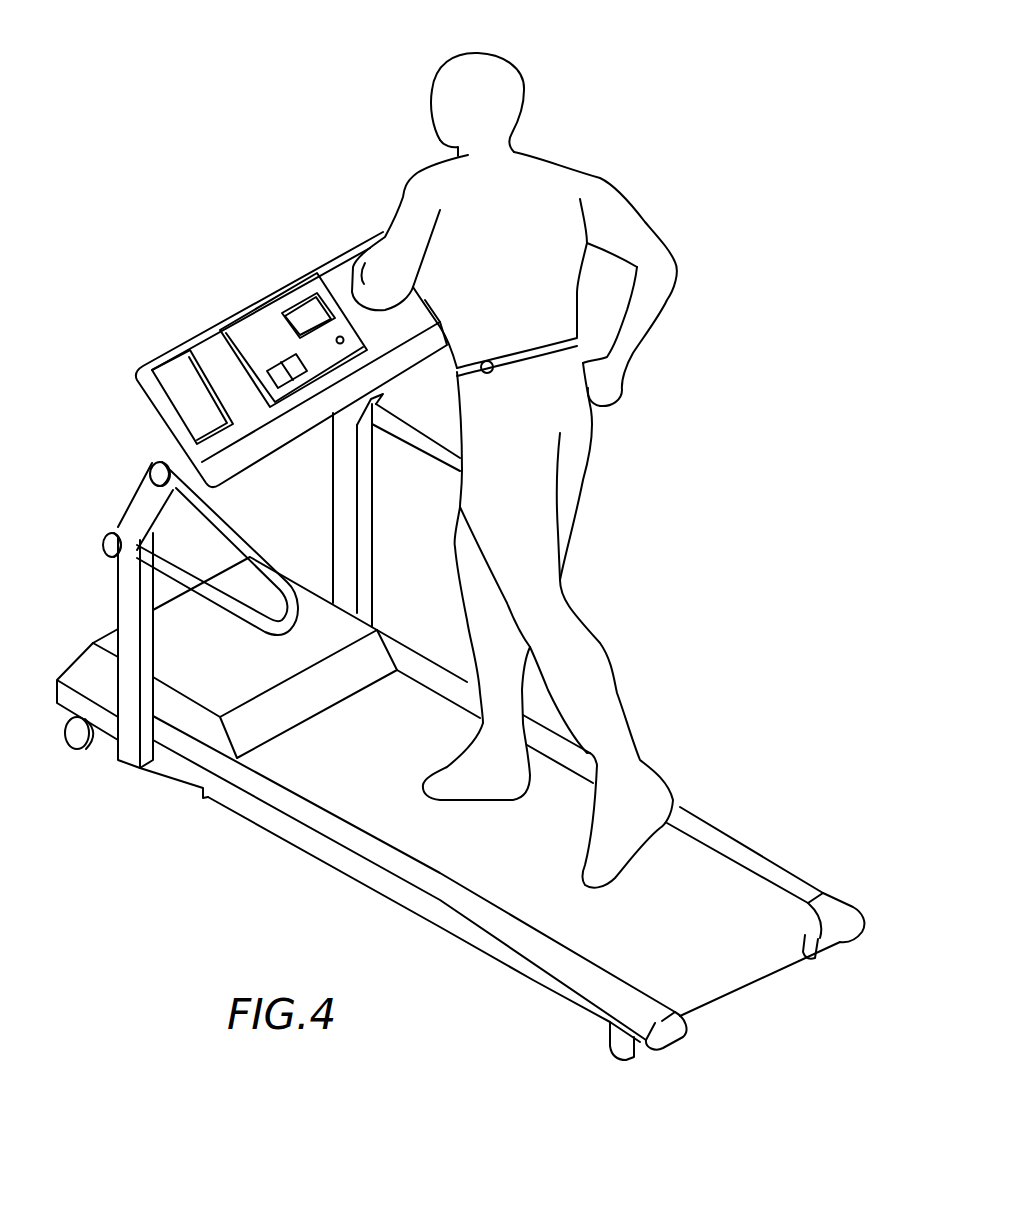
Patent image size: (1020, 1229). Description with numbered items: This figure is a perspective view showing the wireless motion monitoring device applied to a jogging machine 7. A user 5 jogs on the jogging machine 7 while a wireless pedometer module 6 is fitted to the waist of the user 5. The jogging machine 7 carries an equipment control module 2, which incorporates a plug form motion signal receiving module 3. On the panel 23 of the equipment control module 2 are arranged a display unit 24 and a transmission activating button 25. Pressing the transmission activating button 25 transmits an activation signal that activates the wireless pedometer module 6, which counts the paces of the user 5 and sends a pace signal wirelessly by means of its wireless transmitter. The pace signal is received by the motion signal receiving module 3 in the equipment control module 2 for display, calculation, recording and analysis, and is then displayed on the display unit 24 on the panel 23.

The equipment control module 2 is at (222, 348).
The motion signal receiving module 3 is at (267, 310).
The panel 23 is at (290, 367).
The display unit 24 is at (310, 323).
The transmission activating button 25 is at (338, 337).
The user 5 is at (542, 178).
The wireless pedometer module 6 is at (493, 372).
The jogging machine 7 is at (128, 475).